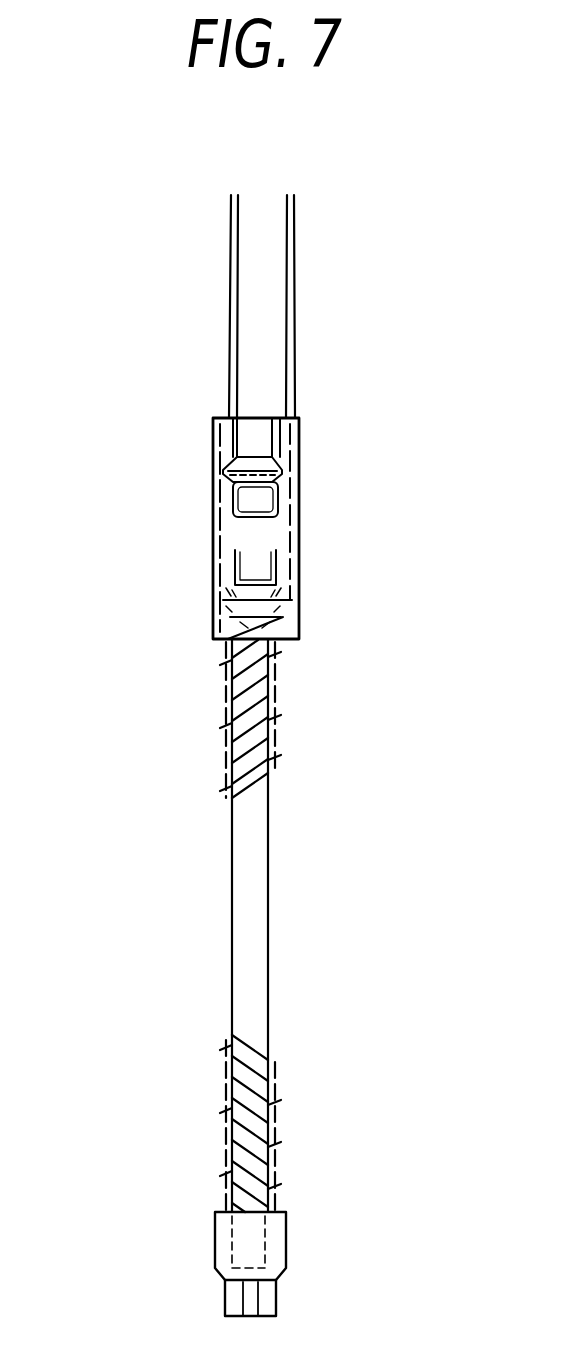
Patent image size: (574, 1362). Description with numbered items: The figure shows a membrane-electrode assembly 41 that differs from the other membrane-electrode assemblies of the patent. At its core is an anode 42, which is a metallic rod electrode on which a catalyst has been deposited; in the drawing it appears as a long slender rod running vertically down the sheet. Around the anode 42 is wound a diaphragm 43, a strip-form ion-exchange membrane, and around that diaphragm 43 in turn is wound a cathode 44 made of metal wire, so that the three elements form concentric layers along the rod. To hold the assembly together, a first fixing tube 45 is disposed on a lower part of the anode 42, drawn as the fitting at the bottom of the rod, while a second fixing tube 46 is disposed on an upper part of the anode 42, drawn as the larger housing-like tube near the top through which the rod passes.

The membrane-electrode assembly 41 is at (192, 565).
The anode 42 is at (272, 722).
The diaphragm 43 is at (277, 772).
The cathode 44 is at (223, 722).
The first fixing tube 45 is at (287, 1240).
The second fixing tube 46 is at (300, 541).